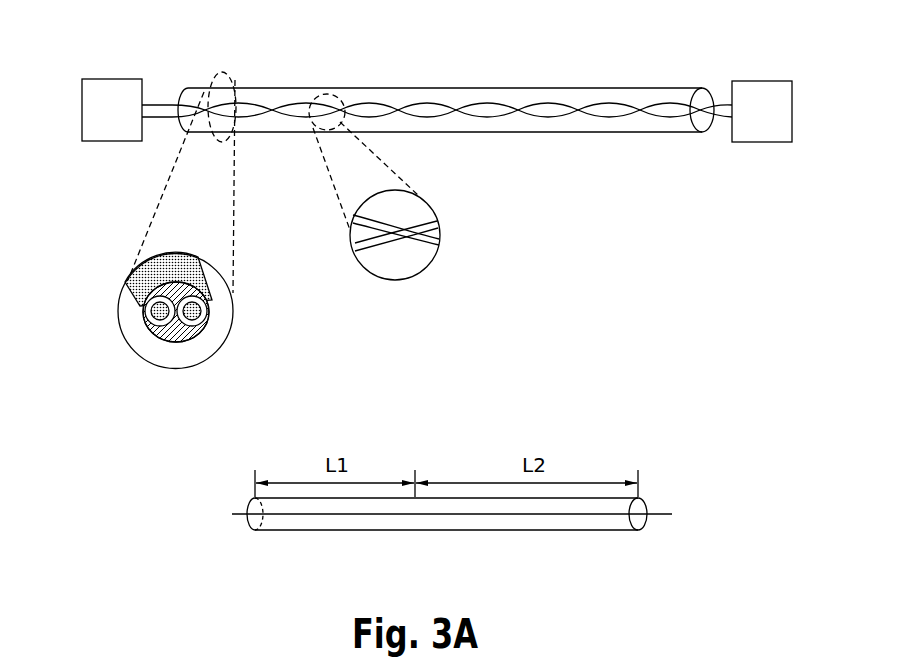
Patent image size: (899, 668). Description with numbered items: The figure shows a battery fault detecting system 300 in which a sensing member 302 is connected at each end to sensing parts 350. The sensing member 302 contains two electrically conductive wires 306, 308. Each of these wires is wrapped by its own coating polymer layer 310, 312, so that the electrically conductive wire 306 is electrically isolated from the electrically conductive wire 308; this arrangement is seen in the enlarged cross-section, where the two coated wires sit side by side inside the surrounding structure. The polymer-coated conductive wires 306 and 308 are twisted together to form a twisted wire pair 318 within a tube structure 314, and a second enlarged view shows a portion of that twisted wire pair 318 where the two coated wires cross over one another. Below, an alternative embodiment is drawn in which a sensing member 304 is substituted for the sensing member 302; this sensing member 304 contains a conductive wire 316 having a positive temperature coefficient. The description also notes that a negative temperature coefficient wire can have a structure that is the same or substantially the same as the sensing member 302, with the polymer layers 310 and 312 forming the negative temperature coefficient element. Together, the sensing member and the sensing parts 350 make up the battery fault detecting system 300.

The battery fault detecting system 300 is at (80, 35).
The sensing member 302 is at (498, 88).
The sensing member 304 is at (613, 532).
The electrically conductive wire 306 is at (160, 317).
The electrically conductive wire 308 is at (193, 317).
The coating polymer layer 310 is at (147, 310).
The coating polymer layer 312 is at (207, 297).
The tube structure 314 is at (160, 282).
The conductive wire 316 is at (663, 512).
The twisted wire pair 318 is at (387, 280).
The sensing parts 350 is at (132, 124).